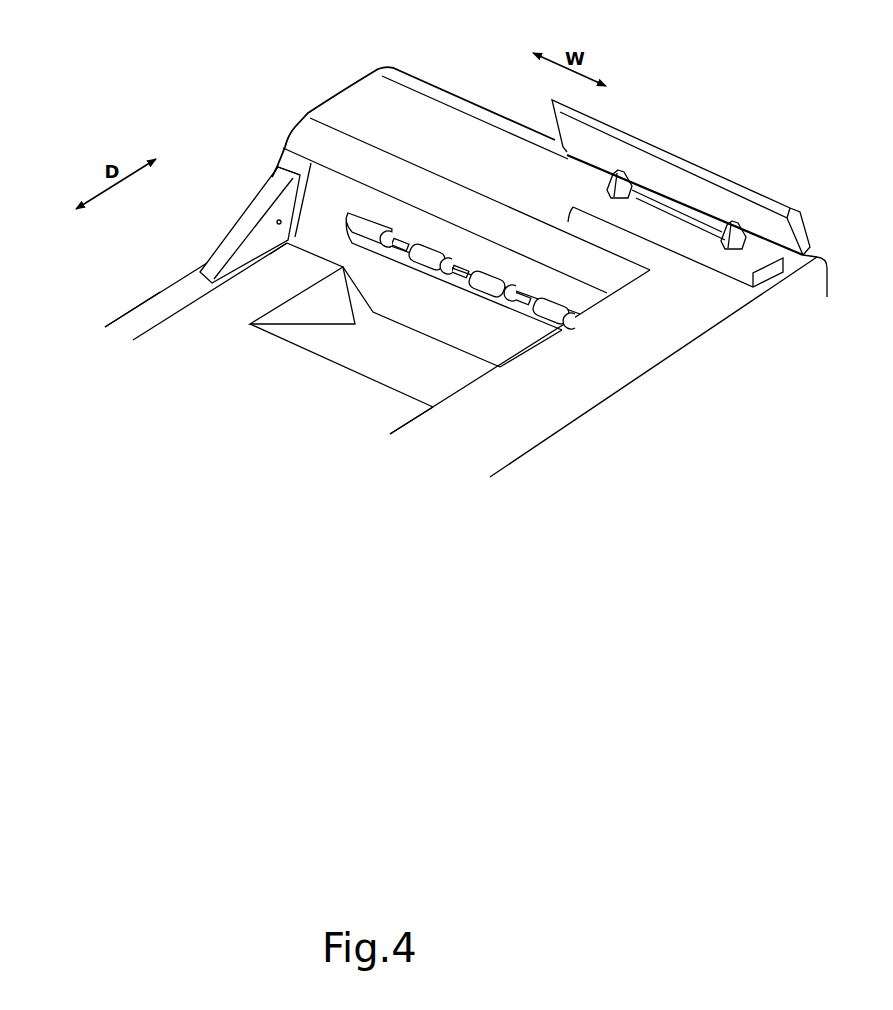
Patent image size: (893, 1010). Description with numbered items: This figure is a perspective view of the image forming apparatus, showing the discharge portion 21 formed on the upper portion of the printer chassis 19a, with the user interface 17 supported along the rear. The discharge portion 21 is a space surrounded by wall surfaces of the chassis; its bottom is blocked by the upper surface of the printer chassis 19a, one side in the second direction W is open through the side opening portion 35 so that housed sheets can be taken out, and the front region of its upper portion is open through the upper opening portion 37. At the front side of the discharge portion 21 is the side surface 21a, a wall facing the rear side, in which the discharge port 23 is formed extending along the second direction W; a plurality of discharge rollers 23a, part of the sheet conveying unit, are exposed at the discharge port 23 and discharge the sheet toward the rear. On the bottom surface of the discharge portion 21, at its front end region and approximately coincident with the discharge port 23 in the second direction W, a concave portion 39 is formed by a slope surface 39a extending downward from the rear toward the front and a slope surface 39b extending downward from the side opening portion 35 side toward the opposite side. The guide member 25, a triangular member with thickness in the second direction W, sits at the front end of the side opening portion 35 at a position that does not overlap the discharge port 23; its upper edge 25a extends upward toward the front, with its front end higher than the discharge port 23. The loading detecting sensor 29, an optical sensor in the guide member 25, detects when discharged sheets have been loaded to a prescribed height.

The user interface 17 is at (693, 173).
The printer chassis 19a is at (624, 362).
The discharge portion 21 is at (345, 396).
The side surface 21a is at (405, 217).
The discharge port 23 is at (447, 258).
The discharge rollers 23a is at (490, 283).
The guide member 25 is at (229, 225).
The upper edge 25a is at (264, 190).
The loading detecting sensor 29 is at (287, 242).
The side opening portion 35 is at (127, 312).
The upper opening portion 37 is at (507, 352).
The concave portion 39 is at (358, 358).
The slope surface 39a is at (407, 372).
The slope surface 39b is at (308, 300).